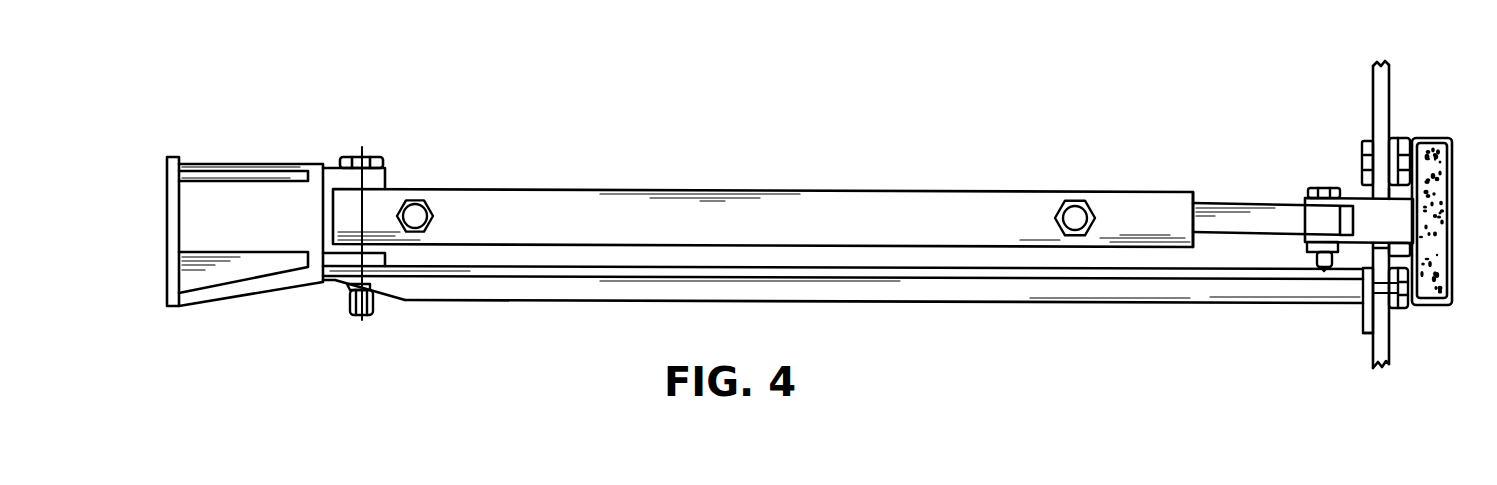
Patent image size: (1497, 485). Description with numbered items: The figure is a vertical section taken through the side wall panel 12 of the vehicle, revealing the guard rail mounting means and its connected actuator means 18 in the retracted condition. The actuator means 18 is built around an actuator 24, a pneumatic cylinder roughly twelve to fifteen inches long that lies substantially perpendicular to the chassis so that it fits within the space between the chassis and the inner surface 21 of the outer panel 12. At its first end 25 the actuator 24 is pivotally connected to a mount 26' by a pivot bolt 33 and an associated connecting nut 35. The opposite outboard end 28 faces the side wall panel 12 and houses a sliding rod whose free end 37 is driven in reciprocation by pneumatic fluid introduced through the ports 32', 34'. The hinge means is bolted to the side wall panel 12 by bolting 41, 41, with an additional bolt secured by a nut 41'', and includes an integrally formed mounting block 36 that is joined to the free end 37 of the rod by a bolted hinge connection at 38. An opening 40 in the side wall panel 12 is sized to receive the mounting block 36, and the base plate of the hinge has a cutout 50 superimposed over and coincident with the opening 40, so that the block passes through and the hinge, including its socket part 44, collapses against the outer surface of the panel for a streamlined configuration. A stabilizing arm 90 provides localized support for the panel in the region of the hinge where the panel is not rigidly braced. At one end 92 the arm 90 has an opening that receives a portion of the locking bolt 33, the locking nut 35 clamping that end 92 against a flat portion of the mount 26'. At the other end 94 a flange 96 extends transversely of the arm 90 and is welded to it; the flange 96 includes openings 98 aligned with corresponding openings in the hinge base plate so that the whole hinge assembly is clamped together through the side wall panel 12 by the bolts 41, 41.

The side wall panel 12 is at (1369, 194).
The actuator means 18 is at (763, 166).
The inner surface of the outer panel 21 is at (1373, 78).
The actuator 24 is at (890, 189).
The first end 25 is at (338, 220).
The mount 26' is at (245, 195).
The outboard end 28 is at (1150, 190).
The port 32' is at (443, 158).
The pivot bolt 33 is at (350, 157).
The port 34' is at (1075, 160).
The connecting nut 35 is at (347, 293).
The mounting block 36 is at (1365, 233).
The free end 37 is at (1273, 219).
The bolted hinge connection 38 is at (1310, 188).
The opening 40 is at (1382, 255).
The bolt 41 is at (1418, 218).
The nut 41'' is at (1331, 137).
The socket part 44 is at (1446, 198).
The cutout 50 is at (1397, 197).
The stabilizing arm 90 is at (933, 285).
The end of stabilizing arm 92 is at (403, 300).
The other end of arm 94 is at (1320, 305).
The flange 96 is at (1362, 335).
The openings 98 is at (1362, 303).